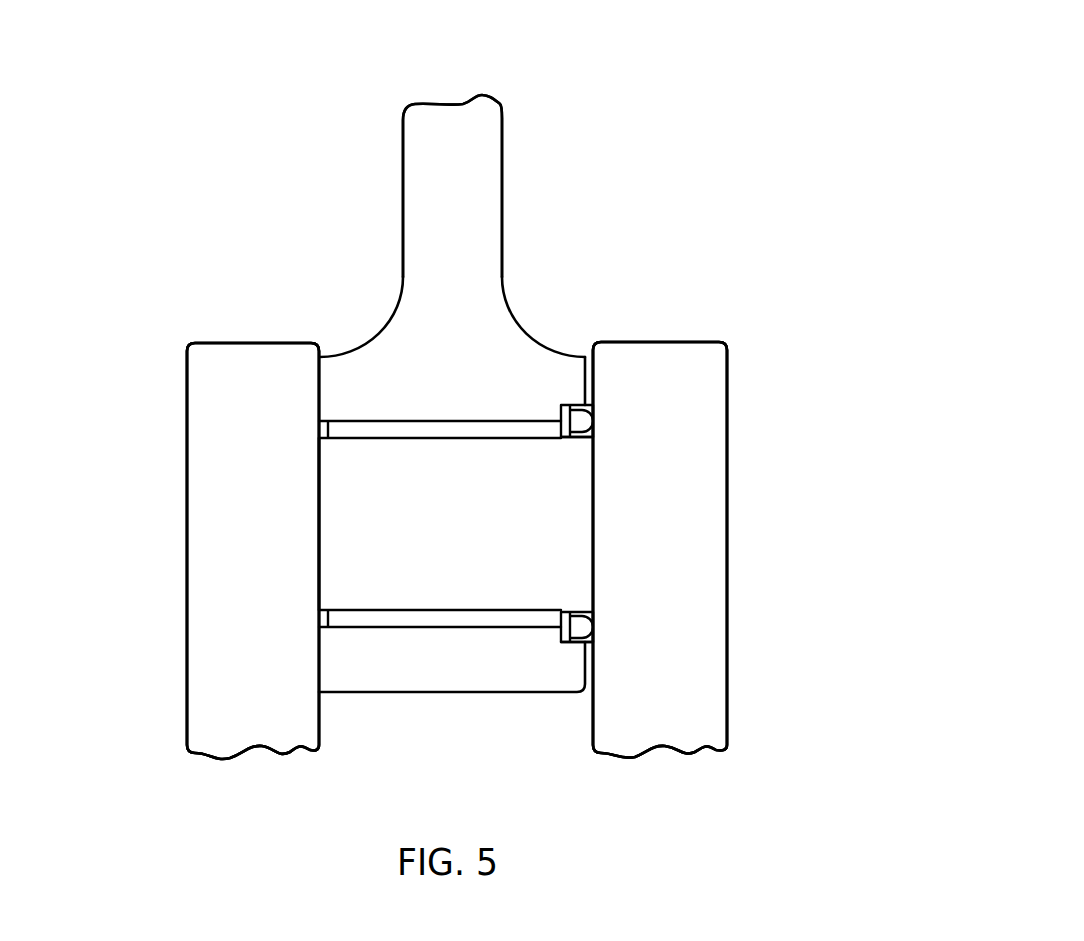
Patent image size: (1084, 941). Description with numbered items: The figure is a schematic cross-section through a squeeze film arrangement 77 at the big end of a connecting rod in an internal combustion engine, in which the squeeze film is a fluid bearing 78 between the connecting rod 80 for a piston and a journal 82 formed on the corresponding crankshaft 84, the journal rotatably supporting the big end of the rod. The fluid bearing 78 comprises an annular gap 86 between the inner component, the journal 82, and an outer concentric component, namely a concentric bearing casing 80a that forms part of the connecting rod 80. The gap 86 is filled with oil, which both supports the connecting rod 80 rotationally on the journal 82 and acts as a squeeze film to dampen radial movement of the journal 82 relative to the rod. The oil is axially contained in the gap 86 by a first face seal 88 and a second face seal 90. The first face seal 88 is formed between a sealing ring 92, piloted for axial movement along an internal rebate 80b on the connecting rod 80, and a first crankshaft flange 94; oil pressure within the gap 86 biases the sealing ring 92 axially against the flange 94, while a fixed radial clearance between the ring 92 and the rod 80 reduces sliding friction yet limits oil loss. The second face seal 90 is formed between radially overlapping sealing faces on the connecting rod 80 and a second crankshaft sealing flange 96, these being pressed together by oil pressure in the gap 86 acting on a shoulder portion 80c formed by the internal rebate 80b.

The squeeze film arrangement 77 is at (852, 285).
The fluid bearing 78 is at (447, 423).
The connecting rod 80 is at (438, 137).
The concentric bearing casing 80a is at (468, 618).
The internal rebate 80b is at (580, 437).
The shoulder portion 80c is at (563, 637).
The journal 82 is at (582, 527).
The crankshaft 84 is at (765, 723).
The annular gap 86 is at (505, 445).
The first face seal 88 is at (580, 628).
The second face seal 90 is at (318, 380).
The sealing ring 92 is at (580, 420).
The first crankshaft flange 94 is at (700, 427).
The second crankshaft sealing flange 96 is at (217, 575).